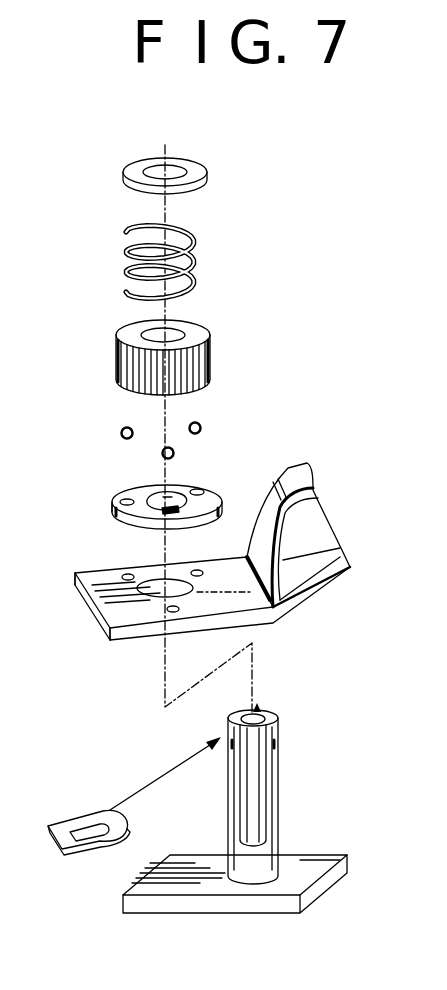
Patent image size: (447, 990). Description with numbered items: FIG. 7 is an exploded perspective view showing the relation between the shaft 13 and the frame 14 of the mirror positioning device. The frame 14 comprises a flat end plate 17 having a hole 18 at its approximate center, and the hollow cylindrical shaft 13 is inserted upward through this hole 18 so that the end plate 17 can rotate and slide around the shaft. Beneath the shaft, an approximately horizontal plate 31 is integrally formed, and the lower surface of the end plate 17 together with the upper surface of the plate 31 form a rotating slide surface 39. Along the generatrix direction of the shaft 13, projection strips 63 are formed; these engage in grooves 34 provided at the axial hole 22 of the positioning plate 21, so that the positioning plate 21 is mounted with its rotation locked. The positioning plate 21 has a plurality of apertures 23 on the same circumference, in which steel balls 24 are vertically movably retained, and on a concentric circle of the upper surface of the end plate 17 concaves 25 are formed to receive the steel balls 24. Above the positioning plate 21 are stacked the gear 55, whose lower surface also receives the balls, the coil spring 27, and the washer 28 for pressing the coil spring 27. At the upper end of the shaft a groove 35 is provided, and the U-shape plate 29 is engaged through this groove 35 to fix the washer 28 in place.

The shaft 13 is at (280, 780).
The frame 14 is at (318, 595).
The end plate 17 is at (104, 635).
The hole 18 is at (103, 628).
The positioning plate 21 is at (214, 503).
The hole 22 is at (156, 496).
The apertures 23 is at (113, 519).
The steel balls 24 is at (163, 451).
The concaves 25 is at (124, 573).
The coil spring 27 is at (197, 249).
The washer 28 is at (208, 175).
The U-shape plate 29 is at (77, 855).
The plate portion 31 is at (135, 905).
The grooves 34 is at (168, 498).
The groove 35 is at (278, 742).
The rotating slide surface 39 is at (325, 860).
The gear 55 is at (212, 359).
The projection strips 63 is at (275, 728).